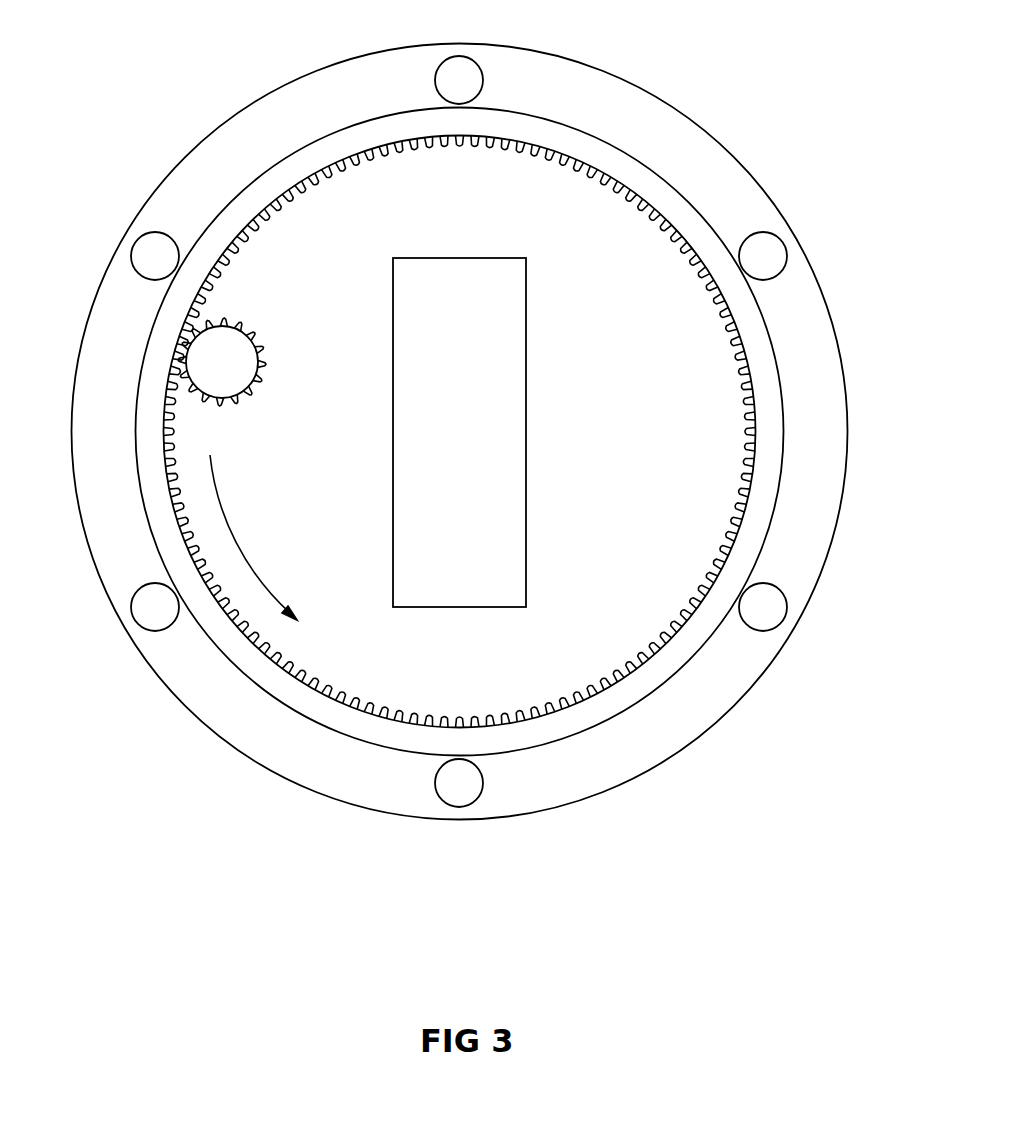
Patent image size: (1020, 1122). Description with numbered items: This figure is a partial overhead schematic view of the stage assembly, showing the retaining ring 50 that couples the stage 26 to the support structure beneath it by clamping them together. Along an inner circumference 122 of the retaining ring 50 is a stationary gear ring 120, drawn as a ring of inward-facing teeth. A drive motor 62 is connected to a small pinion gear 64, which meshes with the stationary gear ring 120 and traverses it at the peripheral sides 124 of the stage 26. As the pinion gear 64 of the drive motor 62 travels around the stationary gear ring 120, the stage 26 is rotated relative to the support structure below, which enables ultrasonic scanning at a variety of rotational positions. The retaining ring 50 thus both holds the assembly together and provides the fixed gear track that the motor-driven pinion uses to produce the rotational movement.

The retaining ring 50 is at (676, 130).
The stationary gear ring 120 is at (573, 718).
The inner circumference 122 is at (657, 682).
The stage 26 is at (362, 676).
The peripheral sides 124 is at (706, 375).
The drive motor 62 is at (213, 362).
The pinion gear 64 is at (238, 322).